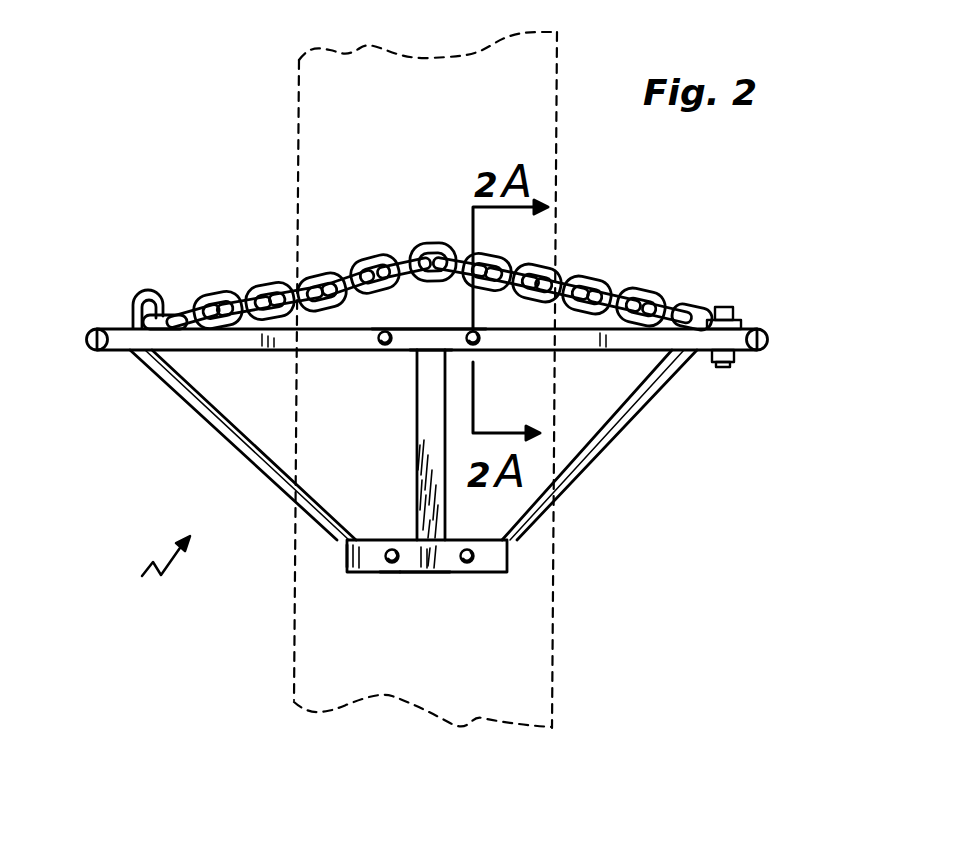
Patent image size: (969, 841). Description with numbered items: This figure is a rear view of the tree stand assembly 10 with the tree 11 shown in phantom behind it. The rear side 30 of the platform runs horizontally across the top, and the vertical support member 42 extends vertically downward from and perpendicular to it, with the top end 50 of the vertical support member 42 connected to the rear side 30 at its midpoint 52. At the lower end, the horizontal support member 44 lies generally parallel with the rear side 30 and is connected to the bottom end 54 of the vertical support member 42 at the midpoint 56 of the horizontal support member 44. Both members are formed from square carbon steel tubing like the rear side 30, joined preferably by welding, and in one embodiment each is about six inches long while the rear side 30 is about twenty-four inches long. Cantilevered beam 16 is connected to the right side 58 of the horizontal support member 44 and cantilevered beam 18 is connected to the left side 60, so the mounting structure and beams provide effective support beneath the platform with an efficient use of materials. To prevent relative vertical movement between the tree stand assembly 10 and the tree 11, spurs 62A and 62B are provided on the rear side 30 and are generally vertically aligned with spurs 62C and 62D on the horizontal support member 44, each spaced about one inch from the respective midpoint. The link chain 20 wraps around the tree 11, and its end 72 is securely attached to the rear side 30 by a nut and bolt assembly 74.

The tree stand assembly 10 is at (150, 580).
The tree 11 is at (298, 148).
The cantilevered beam 16 is at (652, 403).
The cantilevered beam 18 is at (223, 437).
The link chain 20 is at (582, 280).
The rear side 30 is at (100, 328).
The vertical support member 42 is at (417, 445).
The horizontal support member 44 is at (390, 575).
The top end 50 is at (417, 358).
The midpoint 52 is at (433, 345).
The bottom end 54 is at (435, 553).
The midpoint 56 is at (424, 572).
The right side 58 is at (508, 554).
The left side 60 is at (347, 557).
The spur 62A is at (385, 335).
The spur 62B is at (477, 338).
The spur 62C is at (385, 565).
The spur 62D is at (477, 572).
The end 72 is at (742, 323).
The nut and bolt assembly 74 is at (717, 307).